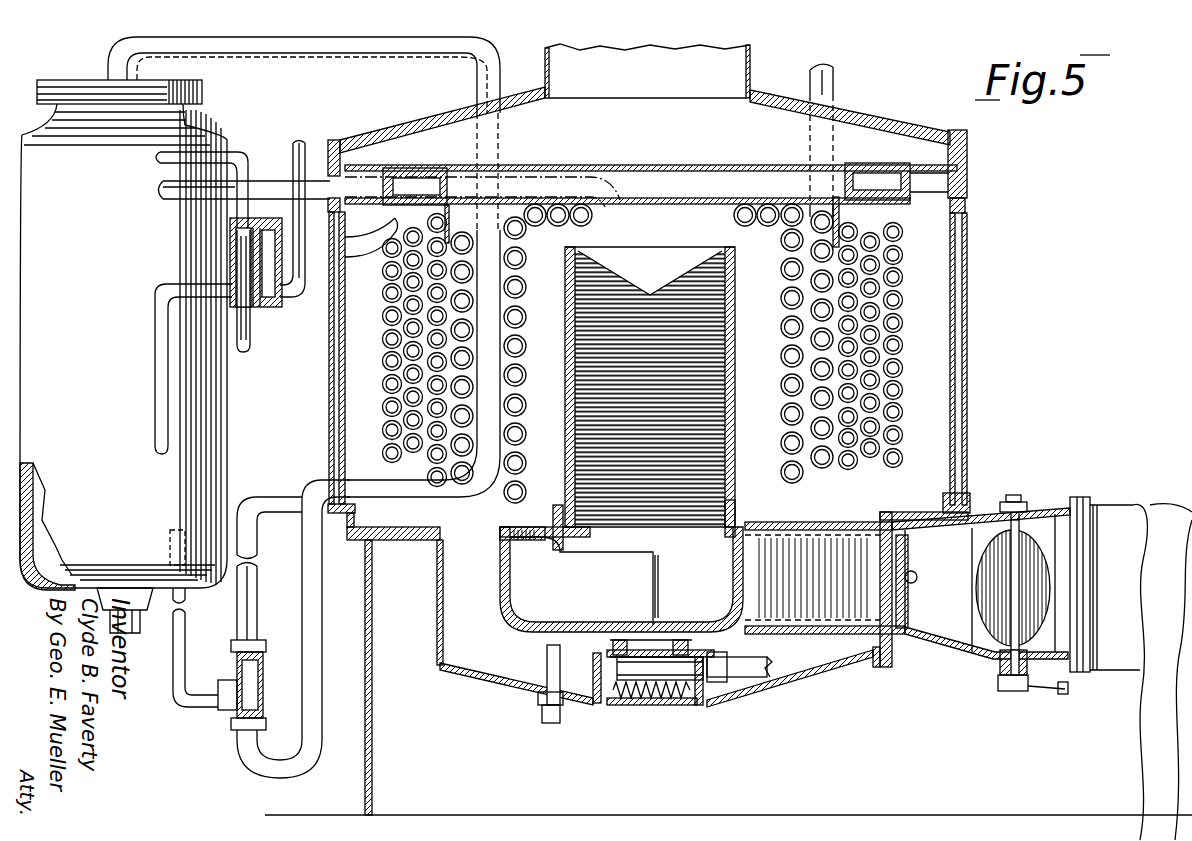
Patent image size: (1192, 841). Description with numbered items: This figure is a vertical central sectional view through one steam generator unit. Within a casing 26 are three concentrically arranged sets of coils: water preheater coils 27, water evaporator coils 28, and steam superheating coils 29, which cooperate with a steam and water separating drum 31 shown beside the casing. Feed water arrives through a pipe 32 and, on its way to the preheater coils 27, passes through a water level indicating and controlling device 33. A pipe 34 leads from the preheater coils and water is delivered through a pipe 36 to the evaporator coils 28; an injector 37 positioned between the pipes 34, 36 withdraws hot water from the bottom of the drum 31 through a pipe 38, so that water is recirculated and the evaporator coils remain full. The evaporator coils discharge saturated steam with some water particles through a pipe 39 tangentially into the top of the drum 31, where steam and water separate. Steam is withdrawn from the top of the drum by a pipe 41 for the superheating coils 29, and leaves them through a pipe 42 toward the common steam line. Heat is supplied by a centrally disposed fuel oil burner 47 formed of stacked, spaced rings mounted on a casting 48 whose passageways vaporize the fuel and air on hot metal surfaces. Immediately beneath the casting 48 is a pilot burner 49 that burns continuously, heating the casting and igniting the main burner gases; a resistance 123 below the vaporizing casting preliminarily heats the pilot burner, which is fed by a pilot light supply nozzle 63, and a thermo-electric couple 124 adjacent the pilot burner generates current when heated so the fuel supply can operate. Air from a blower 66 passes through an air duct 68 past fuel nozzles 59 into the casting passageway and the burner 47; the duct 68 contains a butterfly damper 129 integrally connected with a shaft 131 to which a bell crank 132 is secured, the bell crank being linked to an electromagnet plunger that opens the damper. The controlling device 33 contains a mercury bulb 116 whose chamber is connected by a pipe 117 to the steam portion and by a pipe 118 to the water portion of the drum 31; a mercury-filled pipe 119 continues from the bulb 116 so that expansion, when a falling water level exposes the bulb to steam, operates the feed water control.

The casing 26 is at (968, 295).
The water preheater coils 27 is at (900, 253).
The water evaporator coils 28 is at (745, 212).
The steam superheating coils 29 is at (822, 462).
The steam and water separating drum 31 is at (218, 398).
The pipe 32 is at (300, 143).
The water level indicating and controlling device 33 is at (268, 305).
The pipe 34 is at (313, 592).
The pipe 36 is at (253, 605).
The injector 37 is at (262, 690).
The pipe 38 is at (181, 632).
The pipe 39 is at (262, 180).
The pipe 41 is at (323, 50).
The pipe 42 is at (826, 90).
The fuel oil burner 47 is at (730, 345).
The casting 48 is at (730, 608).
The pilot burner 49 is at (612, 648).
The nozzles 59 is at (915, 582).
The pilot light supply nozzle 63 is at (681, 676).
The blower 66 is at (1178, 548).
The air duct 68 is at (1082, 525).
The mercury bulb 116 is at (240, 260).
The pipe 117 is at (213, 152).
The pipe 118 is at (160, 408).
The pipe 119 is at (249, 352).
The resistance 123 is at (640, 700).
The thermo-electric couple 124 is at (546, 655).
The butterfly damper 129 is at (1020, 555).
The shaft 131 is at (1000, 668).
The bell crank 132 is at (1060, 691).